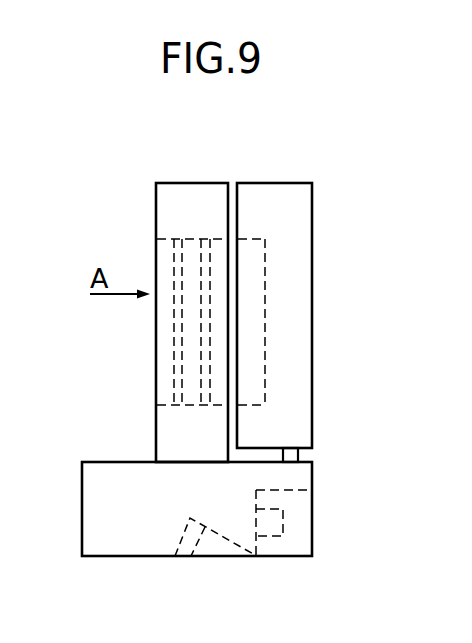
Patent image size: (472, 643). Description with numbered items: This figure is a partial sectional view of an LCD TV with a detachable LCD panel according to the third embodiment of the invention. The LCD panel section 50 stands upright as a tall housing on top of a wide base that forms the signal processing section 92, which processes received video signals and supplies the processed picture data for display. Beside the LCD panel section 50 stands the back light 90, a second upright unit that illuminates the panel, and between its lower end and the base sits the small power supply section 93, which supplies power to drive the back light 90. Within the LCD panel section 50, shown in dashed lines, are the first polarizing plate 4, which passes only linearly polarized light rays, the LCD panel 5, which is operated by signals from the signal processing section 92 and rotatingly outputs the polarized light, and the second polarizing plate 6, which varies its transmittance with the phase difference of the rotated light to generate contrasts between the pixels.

The first polarizing plate 4 is at (210, 245).
The LCD panel 5 is at (193, 245).
The second polarizing plate 6 is at (178, 245).
The LCD panel section 50 is at (162, 431).
The back light 90 is at (280, 193).
The signal processing section 92 is at (96, 503).
The power supply section 93 is at (298, 455).